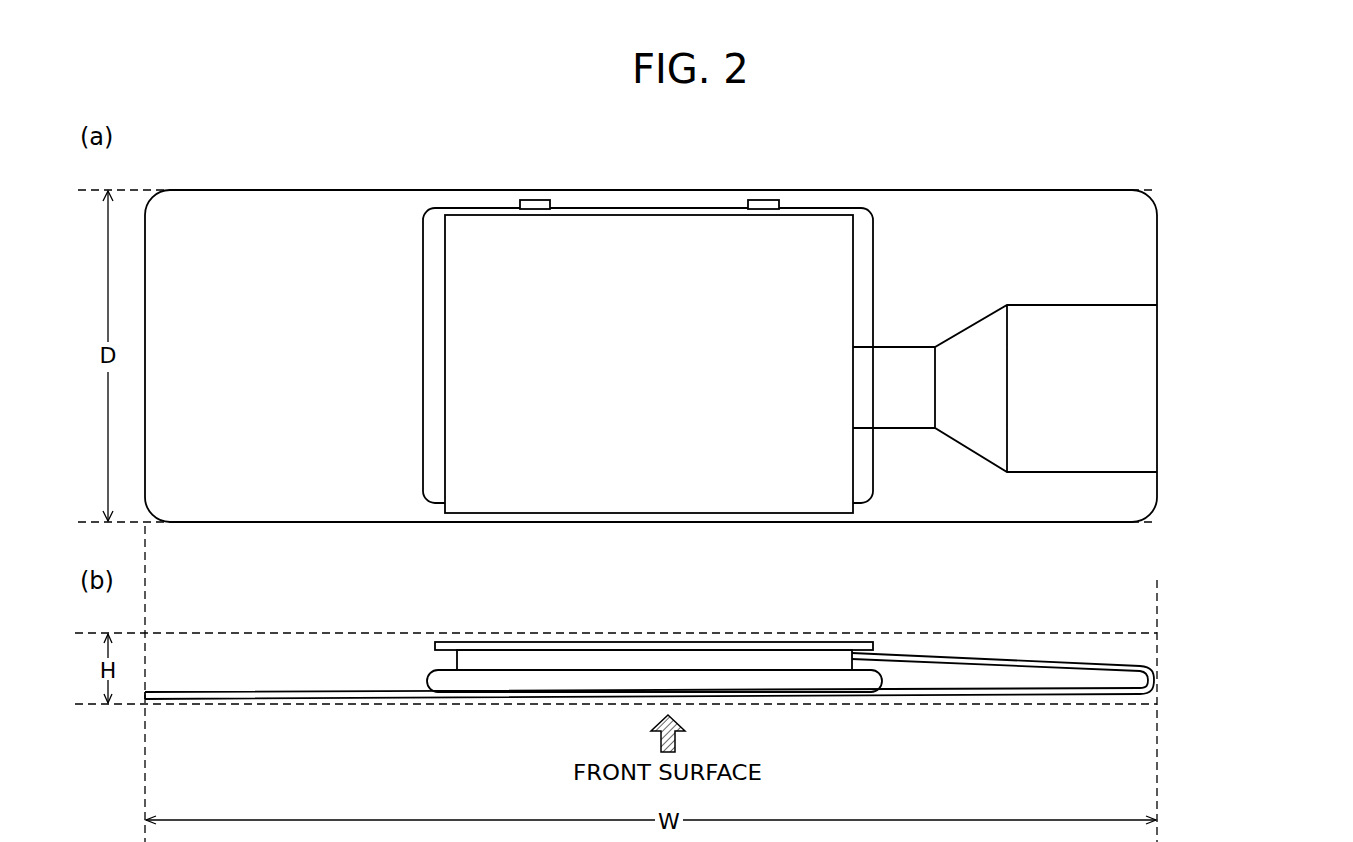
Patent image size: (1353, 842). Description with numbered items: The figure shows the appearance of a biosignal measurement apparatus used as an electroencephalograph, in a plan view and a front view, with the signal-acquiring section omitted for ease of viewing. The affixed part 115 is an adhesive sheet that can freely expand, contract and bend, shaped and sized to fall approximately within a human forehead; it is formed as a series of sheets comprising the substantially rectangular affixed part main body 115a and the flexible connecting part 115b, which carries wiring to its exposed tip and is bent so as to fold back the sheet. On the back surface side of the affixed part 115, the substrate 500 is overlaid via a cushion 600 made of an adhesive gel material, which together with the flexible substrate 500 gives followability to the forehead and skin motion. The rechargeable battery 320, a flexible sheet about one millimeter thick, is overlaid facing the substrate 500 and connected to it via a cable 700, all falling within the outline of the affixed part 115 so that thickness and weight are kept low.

The affixed part 115 is at (1262, 225).
The affixed part main body 115a is at (1143, 262).
The connecting part 115b is at (1143, 335).
The rechargeable battery 320 is at (478, 211).
The substrate 500 is at (455, 659).
The cushion 600 is at (433, 217).
The cable 700 is at (540, 200).